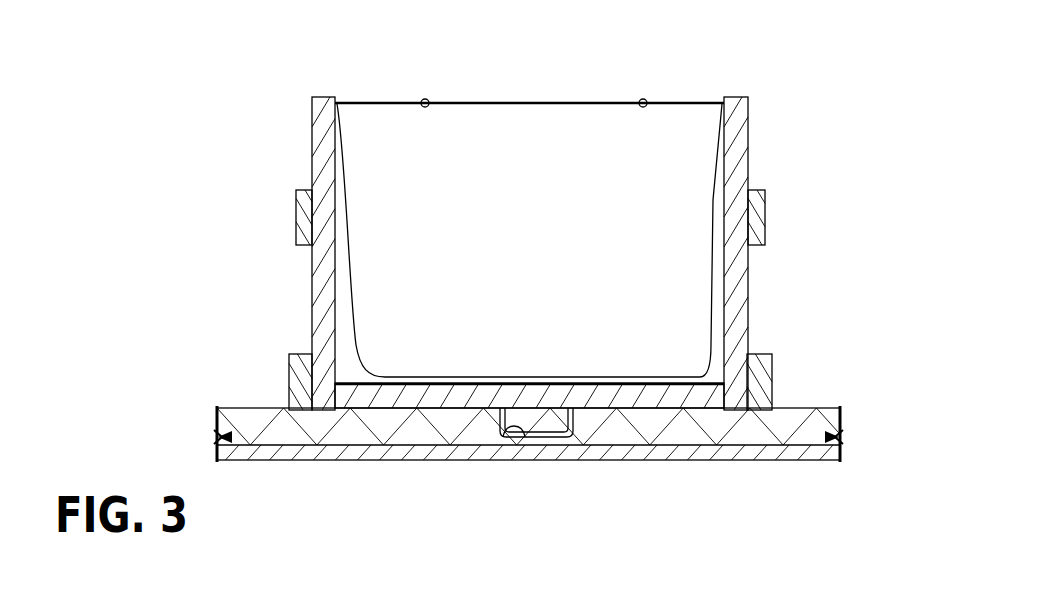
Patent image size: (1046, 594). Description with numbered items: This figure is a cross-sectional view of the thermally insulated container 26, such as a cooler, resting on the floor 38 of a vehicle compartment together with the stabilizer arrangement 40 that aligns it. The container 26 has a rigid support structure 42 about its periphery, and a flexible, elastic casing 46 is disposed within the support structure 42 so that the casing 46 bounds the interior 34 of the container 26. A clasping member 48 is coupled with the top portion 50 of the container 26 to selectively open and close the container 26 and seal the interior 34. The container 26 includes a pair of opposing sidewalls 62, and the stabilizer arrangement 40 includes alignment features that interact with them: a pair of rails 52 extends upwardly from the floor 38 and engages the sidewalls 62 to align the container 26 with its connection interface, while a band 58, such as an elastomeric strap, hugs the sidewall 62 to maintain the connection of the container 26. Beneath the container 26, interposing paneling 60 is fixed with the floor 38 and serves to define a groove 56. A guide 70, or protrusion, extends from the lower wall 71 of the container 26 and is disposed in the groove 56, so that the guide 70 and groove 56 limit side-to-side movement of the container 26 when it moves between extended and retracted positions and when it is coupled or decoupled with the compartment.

The thermally insulated container 26 is at (752, 94).
The interior 34 is at (535, 242).
The floor 38 is at (805, 455).
The stabilizer arrangement 40 is at (298, 265).
The rigid support structure 42 is at (320, 97).
The flexible casing 46 is at (577, 103).
The clasping member 48 is at (425, 102).
The top portion 50 is at (514, 97).
The pair of rails 52 is at (290, 378).
The groove 56 is at (515, 430).
The band 58 is at (296, 205).
The interposing paneling 60 is at (428, 442).
The sidewall 62 is at (745, 152).
The guide 70 is at (532, 430).
The lower wall 71 is at (615, 400).